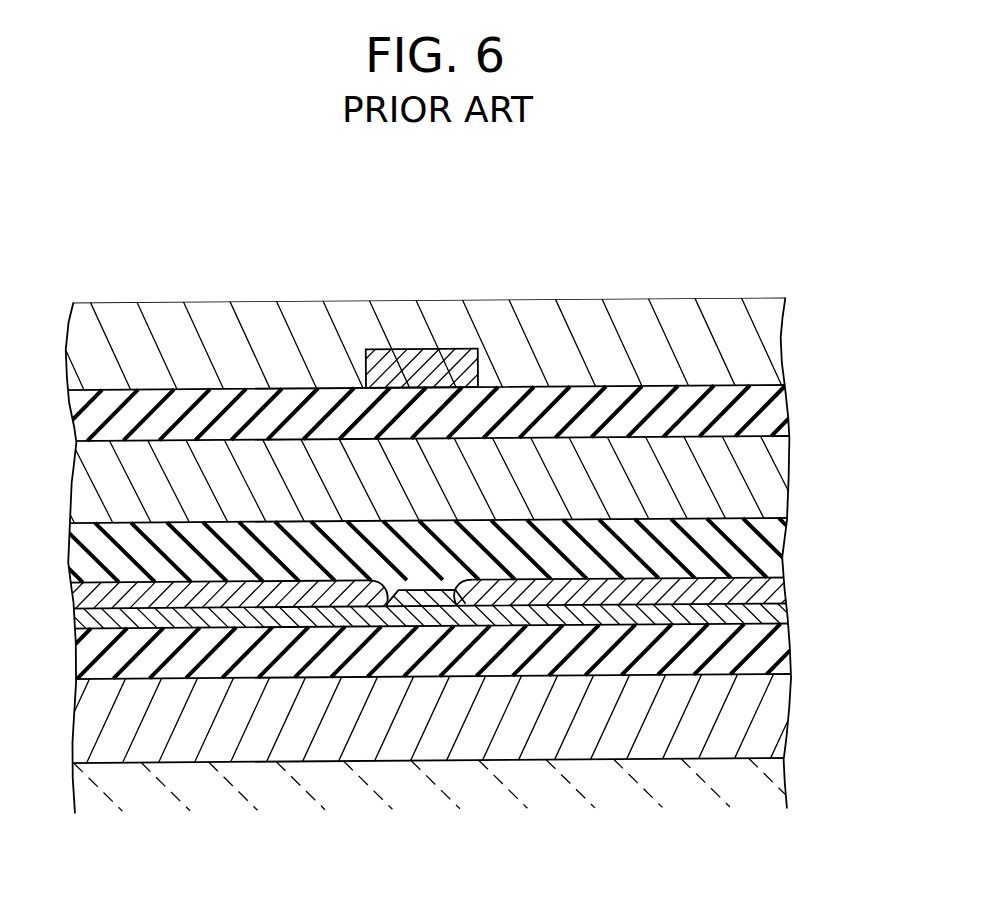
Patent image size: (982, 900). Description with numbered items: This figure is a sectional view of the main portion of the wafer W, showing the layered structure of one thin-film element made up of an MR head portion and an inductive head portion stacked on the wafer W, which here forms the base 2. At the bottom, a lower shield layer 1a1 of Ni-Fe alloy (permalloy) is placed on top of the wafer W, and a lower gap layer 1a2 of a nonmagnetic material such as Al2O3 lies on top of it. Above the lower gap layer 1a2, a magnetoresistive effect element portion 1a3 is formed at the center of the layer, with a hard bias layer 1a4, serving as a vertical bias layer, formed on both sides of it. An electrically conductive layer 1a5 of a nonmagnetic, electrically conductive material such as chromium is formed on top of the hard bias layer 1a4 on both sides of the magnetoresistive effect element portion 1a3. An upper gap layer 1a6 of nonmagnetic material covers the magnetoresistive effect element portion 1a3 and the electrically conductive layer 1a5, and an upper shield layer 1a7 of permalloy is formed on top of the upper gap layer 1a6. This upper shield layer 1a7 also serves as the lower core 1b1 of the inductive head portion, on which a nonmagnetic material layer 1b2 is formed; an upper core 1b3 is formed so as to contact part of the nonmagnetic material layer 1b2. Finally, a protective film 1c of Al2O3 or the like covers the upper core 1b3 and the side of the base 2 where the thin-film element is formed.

The protective film 1c is at (737, 350).
The upper core 1b3 is at (438, 372).
The nonmagnetic material layer 1b2 is at (740, 412).
The upper shield layer 1a7 is at (455, 480).
The lower core 1b1 is at (740, 480).
The upper gap layer 1a6 is at (750, 546).
The electrically conductive layer 1a5 is at (750, 590).
The hard bias layer 1a4 is at (773, 617).
The magnetoresistive effect element portion 1a3 is at (427, 612).
The lower gap layer 1a2 is at (760, 652).
The lower shield layer 1a1 is at (750, 722).
The wafer W is at (442, 785).
The base 2 is at (740, 778).